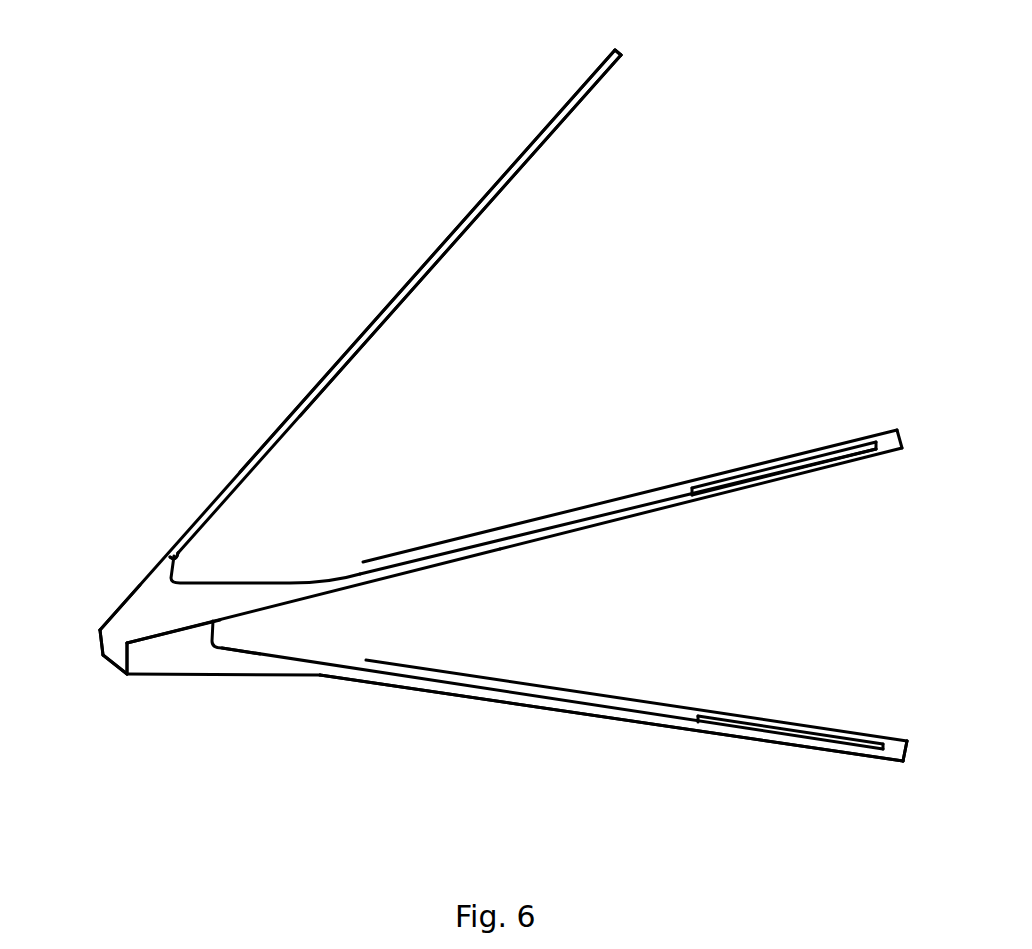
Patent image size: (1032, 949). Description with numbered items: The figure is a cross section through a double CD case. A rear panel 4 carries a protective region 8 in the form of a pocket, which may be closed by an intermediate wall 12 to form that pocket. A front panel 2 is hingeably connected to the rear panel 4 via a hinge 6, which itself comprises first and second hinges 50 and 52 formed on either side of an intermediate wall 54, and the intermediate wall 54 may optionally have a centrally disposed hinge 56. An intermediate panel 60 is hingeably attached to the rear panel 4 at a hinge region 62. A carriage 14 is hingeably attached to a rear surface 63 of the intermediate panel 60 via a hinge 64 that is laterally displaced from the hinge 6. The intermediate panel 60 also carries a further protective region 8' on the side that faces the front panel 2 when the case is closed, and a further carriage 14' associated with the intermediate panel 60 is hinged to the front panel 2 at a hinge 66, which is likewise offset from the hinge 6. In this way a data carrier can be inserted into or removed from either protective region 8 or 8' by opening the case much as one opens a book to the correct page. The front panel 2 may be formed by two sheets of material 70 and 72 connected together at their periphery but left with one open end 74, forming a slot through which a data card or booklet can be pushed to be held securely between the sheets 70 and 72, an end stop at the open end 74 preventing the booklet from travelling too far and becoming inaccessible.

The front panel 2 is at (240, 470).
The rear panel 4 is at (526, 706).
The hinge 6 is at (92, 676).
The protective region 8 is at (613, 704).
The protective region 8' is at (632, 484).
The intermediate wall 12 is at (905, 763).
The carriage 14 is at (552, 707).
The further carriage 14' is at (618, 533).
The first hinge 50 is at (99, 627).
The second hinge 52 is at (128, 675).
The intermediate wall 54 is at (100, 643).
The centrally disposed hinge 56 is at (109, 663).
The intermediate panel 60 is at (742, 490).
The hinge region 62 is at (150, 663).
The rear surface 63 is at (382, 580).
The hinge 64 is at (223, 640).
The hinge 66 is at (178, 576).
The sheet of material 70 is at (370, 325).
The sheet of material 72 is at (393, 315).
The open end 74 is at (623, 55).